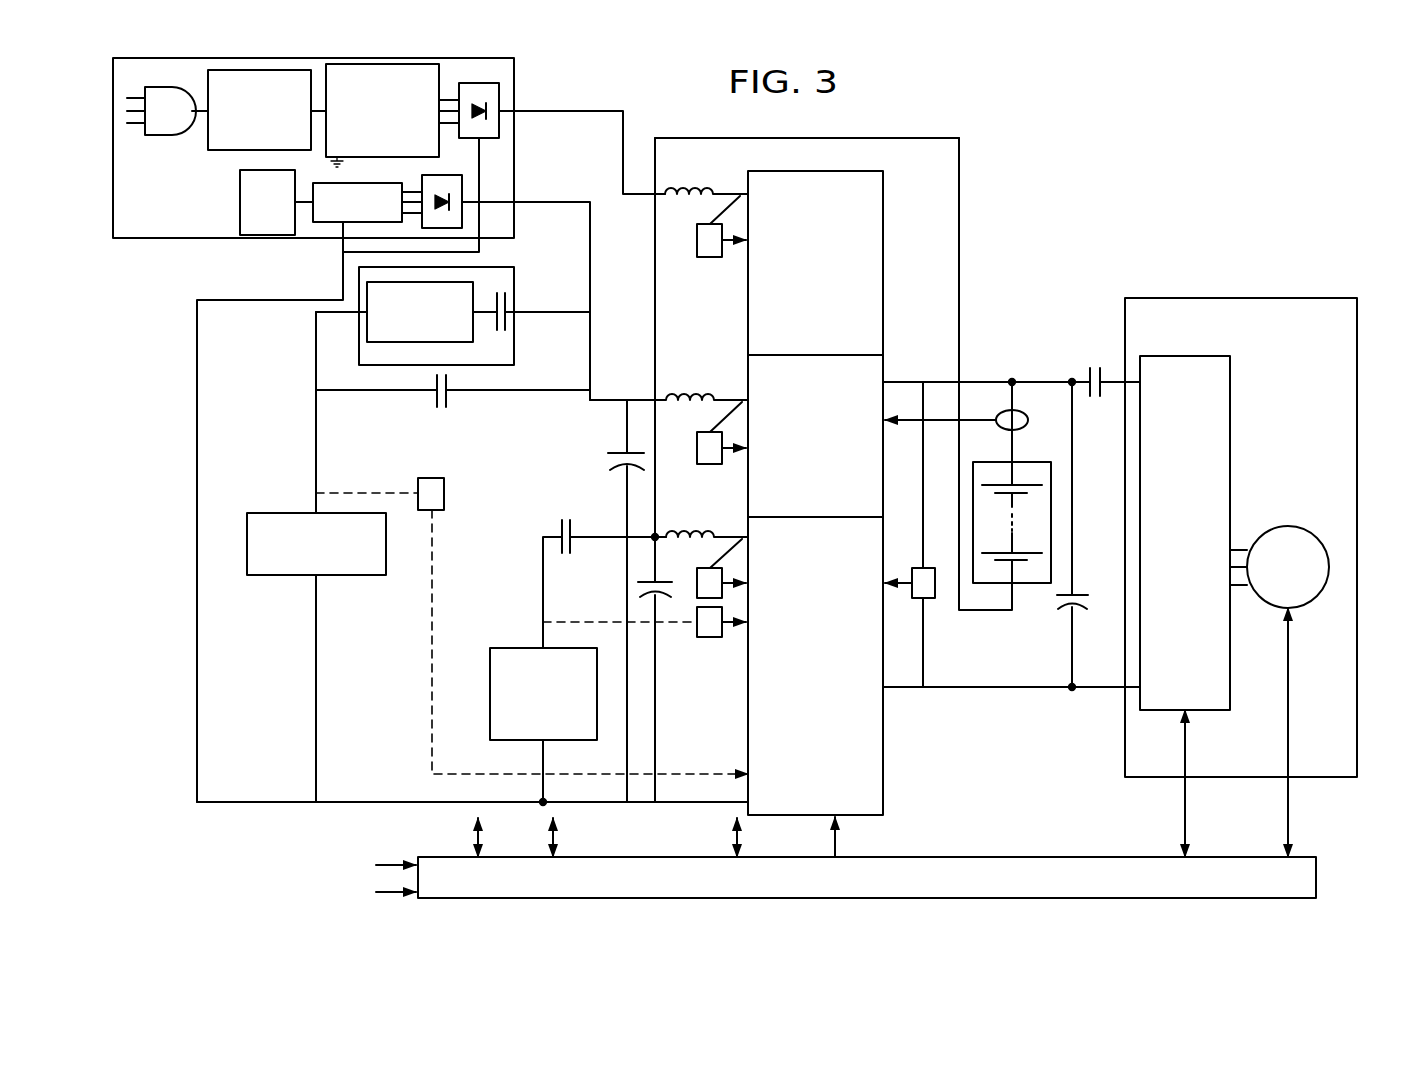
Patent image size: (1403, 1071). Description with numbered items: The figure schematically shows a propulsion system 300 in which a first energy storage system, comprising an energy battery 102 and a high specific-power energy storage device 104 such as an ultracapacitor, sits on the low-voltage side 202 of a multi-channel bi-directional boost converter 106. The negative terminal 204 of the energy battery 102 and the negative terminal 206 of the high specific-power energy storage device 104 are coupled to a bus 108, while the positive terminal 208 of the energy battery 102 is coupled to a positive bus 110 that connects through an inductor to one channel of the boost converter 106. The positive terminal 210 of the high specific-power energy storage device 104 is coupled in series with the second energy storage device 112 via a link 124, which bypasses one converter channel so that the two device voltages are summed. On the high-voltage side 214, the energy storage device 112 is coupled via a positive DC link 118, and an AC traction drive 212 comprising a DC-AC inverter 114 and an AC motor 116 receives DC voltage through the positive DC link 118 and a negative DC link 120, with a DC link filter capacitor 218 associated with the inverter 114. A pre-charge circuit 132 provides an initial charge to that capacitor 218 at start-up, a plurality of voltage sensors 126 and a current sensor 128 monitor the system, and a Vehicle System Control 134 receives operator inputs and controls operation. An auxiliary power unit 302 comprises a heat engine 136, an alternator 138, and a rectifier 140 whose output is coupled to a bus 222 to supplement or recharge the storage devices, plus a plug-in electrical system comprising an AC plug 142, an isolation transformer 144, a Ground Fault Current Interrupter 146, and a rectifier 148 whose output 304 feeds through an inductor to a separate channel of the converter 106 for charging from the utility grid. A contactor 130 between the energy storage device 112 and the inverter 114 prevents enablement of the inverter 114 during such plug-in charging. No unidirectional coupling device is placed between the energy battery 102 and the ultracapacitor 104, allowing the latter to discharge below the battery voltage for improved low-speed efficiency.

The propulsion system 300 is at (1055, 128).
The auxiliary power unit 302 is at (153, 238).
The output of rectifier 304 is at (500, 102).
The AC plug 142 is at (157, 135).
The isolation transformer 144 is at (218, 150).
The Ground Fault Current Interrupter 146 is at (438, 67).
The rectifier 148 is at (500, 125).
The heat engine 136 is at (240, 217).
The alternator 138 is at (330, 222).
The rectifier 140 is at (462, 188).
The bus 222 is at (590, 213).
The pre-charge circuit 132 is at (507, 263).
The bus 110 is at (316, 425).
The positive terminal 208 is at (315, 510).
The voltage sensors 126 is at (444, 505).
The energy battery 102 is at (262, 575).
The negative terminal 204 is at (318, 575).
The high specific-power energy storage device 104 is at (490, 653).
The positive terminal 210 is at (542, 648).
The negative terminal 206 is at (543, 742).
The bus 108 is at (700, 806).
The link 124 is at (932, 138).
The high-voltage side 214 is at (973, 310).
The multi-channel bi-directional boost converter 106 is at (883, 780).
The contactor 130 is at (1098, 345).
The positive DC link 118 is at (1024, 380).
The current sensor 128 is at (1028, 420).
The energy storage device 112 is at (1032, 583).
The negative DC link 120 is at (977, 695).
The DC link filter capacitor 218 is at (1087, 617).
The AC traction drive 212 is at (1285, 298).
The DC-AC inverter 114 is at (1230, 372).
The AC motor 116 is at (1318, 538).
The Vehicle System Control 134 is at (1316, 870).
The low-voltage side 202 is at (670, 808).